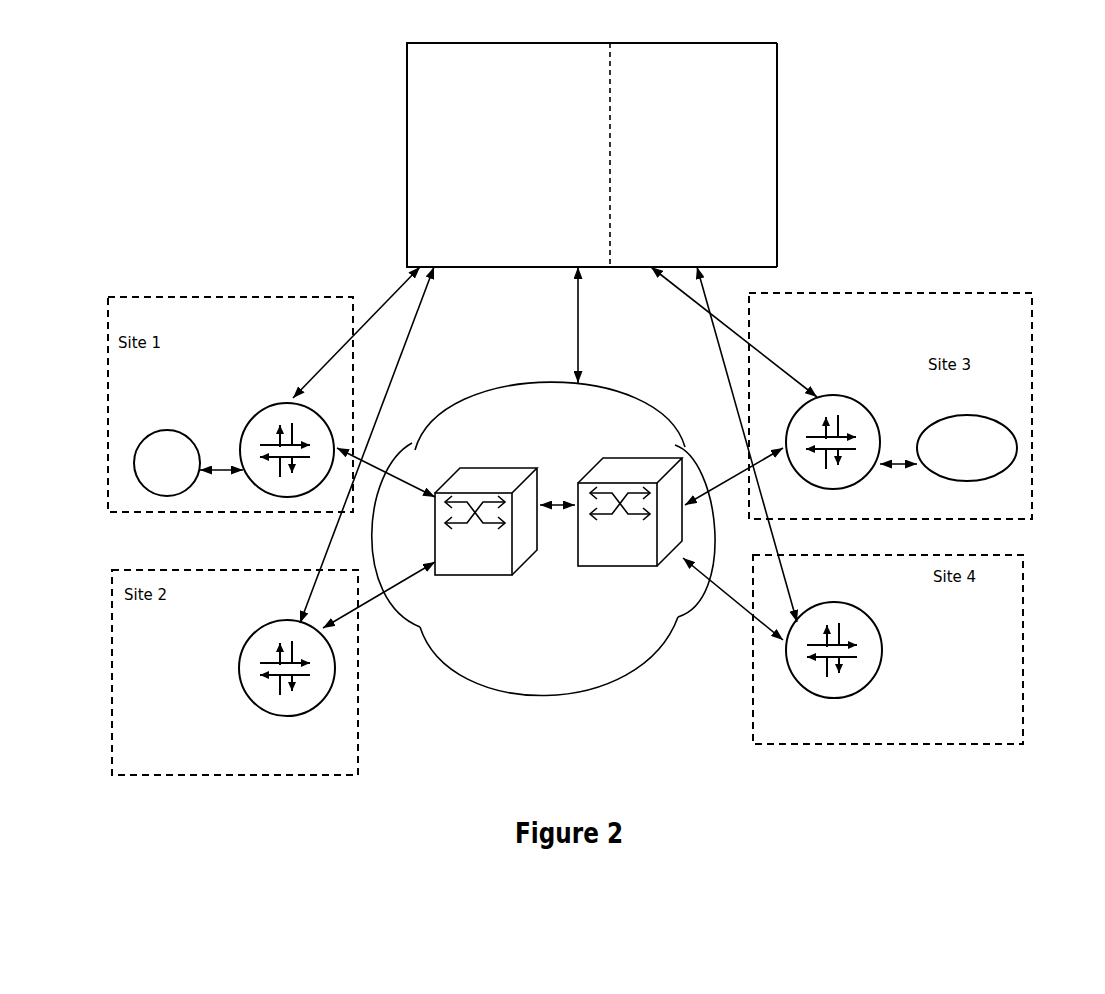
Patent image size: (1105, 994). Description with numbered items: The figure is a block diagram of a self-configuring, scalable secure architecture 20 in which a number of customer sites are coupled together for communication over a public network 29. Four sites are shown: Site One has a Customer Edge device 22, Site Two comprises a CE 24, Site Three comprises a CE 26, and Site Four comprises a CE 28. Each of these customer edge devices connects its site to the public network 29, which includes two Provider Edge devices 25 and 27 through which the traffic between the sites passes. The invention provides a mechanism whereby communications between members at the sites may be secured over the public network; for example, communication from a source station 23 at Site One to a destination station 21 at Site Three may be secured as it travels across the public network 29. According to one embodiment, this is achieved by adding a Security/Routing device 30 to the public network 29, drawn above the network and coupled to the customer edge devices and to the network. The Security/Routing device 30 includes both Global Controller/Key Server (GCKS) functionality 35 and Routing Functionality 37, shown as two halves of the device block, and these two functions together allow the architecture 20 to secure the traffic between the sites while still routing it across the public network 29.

The self-configuring, scalable secure architecture 20 is at (210, 237).
The destination station 21 is at (952, 418).
The Customer Edge (CE) device 22 is at (297, 404).
The source station 23 is at (182, 432).
The CE 24 is at (243, 645).
The Provider Edge (PE) device 25 is at (485, 470).
The CE 26 is at (840, 396).
The PE device 27 is at (630, 460).
The CE 28 is at (833, 602).
The public network 29 is at (508, 385).
The Security/Routing device 30 is at (652, 38).
The Global Controller/Key Server (GCKS) functionality 35 is at (407, 135).
The Routing Functionality 37 is at (777, 119).